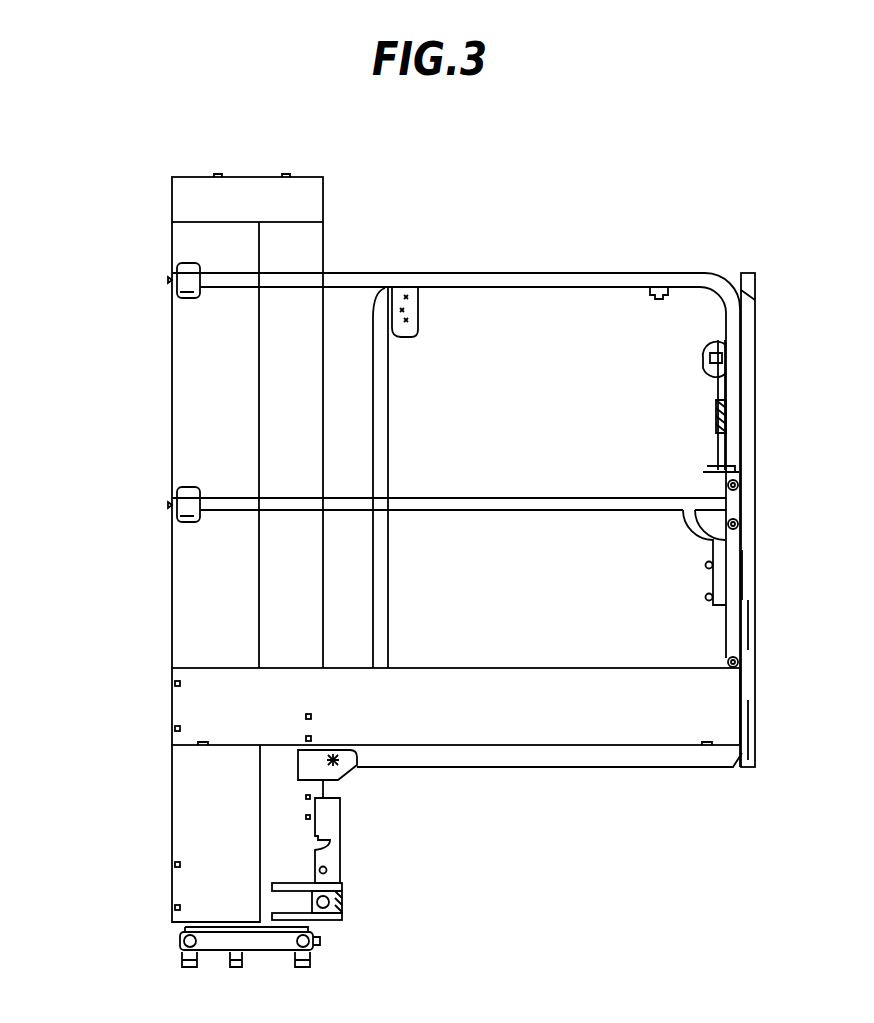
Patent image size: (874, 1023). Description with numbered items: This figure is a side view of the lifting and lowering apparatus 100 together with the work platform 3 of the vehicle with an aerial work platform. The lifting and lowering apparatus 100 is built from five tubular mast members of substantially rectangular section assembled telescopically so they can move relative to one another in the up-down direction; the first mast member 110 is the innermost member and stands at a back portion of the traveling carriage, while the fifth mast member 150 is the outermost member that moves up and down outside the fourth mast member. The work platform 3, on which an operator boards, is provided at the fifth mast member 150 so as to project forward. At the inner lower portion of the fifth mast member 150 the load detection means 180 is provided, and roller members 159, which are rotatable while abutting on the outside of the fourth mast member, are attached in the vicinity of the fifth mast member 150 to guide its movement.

The lifting and lowering apparatus 100 is at (172, 370).
The fifth mast member 150 is at (197, 592).
The work platform 3 is at (708, 692).
The load detection means 180 is at (342, 823).
The roller members 159 is at (342, 903).
The first mast member 110 is at (198, 937).